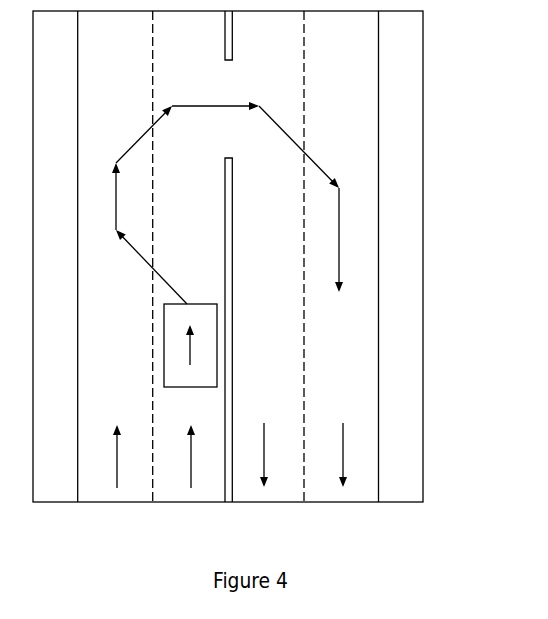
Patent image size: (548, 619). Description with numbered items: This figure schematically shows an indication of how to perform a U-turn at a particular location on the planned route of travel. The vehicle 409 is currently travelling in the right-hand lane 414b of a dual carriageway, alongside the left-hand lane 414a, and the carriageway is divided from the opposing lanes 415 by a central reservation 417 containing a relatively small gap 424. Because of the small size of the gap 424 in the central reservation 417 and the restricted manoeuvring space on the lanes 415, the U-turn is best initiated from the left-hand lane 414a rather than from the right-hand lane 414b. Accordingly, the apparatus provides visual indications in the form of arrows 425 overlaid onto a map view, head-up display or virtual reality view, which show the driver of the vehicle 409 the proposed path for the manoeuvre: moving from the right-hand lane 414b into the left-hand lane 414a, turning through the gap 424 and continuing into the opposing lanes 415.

The gap 424 is at (231, 80).
The arrows 425 is at (339, 234).
The vehicle 409 is at (180, 351).
The central reservation 417 is at (230, 396).
The left-hand lane 414a is at (117, 468).
The right-hand lane 414b is at (191, 468).
The lanes 415 is at (343, 460).